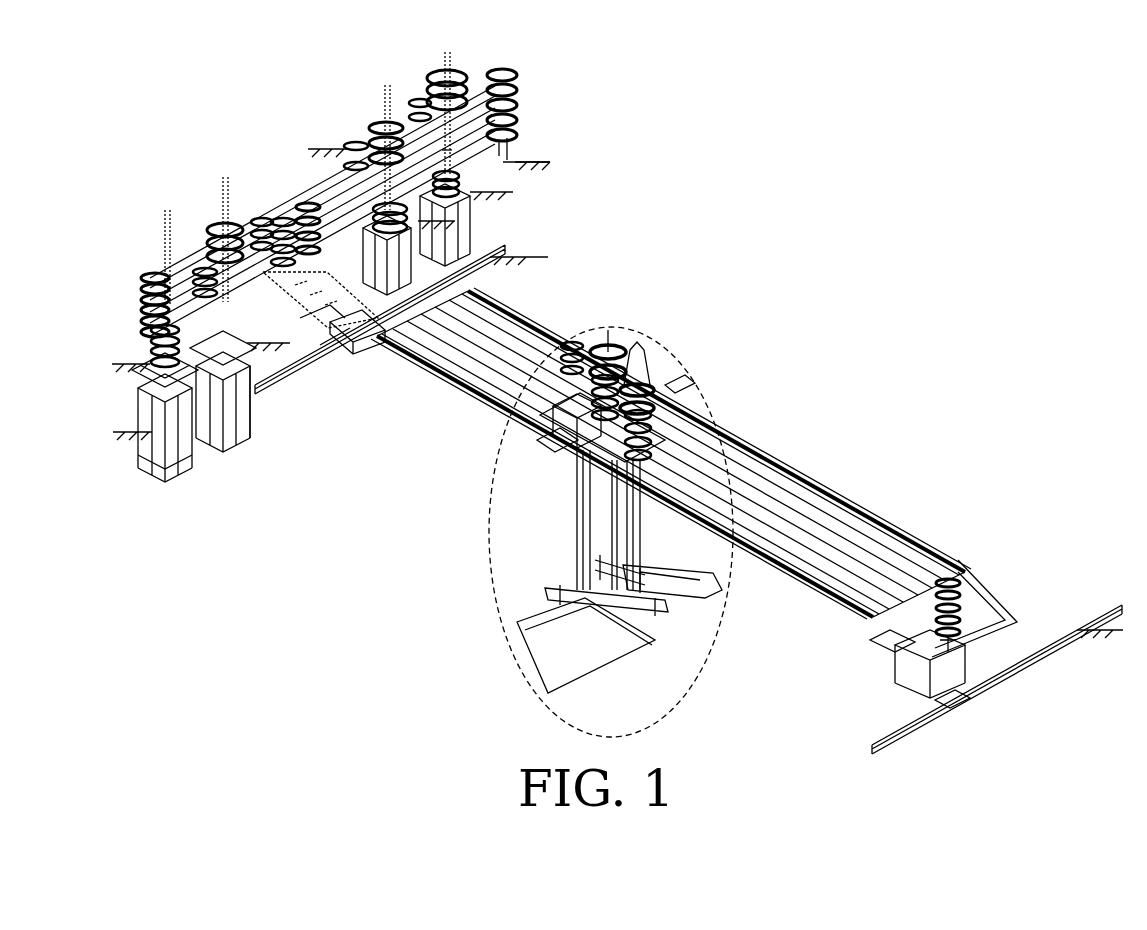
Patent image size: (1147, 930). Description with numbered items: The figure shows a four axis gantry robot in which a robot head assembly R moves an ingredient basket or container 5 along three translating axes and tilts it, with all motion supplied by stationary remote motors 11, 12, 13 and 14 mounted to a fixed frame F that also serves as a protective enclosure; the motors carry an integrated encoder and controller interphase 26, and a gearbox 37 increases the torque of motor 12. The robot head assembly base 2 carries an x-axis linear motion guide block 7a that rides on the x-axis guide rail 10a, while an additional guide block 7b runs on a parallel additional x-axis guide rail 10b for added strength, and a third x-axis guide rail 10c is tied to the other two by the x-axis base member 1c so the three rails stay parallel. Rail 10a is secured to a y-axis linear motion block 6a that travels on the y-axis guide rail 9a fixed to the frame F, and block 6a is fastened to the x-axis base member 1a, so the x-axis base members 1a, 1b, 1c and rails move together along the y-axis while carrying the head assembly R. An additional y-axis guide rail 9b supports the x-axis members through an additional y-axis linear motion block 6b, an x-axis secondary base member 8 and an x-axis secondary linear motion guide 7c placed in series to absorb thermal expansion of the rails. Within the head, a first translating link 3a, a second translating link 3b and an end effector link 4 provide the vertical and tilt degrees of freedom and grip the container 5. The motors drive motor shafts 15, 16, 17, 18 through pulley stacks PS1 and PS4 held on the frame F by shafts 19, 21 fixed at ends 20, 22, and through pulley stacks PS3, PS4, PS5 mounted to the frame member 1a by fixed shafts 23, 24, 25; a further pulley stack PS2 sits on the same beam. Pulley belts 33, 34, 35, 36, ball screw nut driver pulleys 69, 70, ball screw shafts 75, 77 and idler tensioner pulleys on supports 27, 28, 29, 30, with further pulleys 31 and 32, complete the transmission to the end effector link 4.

The x-axis base member 1a is at (310, 330).
The x-axis base member 1b is at (363, 340).
The x-axis base member 1c is at (993, 590).
The robot head assembly base 2 is at (660, 375).
The first translating link 3a is at (617, 570).
The second translating link 3b is at (657, 587).
The end effector link 4 is at (713, 590).
The ingredient basket or container 5 is at (527, 633).
The y-axis linear motion block 6a is at (340, 337).
The additional y-axis linear motion block 6b is at (950, 705).
The x-axis linear motion guide block 7a is at (540, 440).
The additional x-axis linear motion guide block 7b is at (675, 382).
The x-axis secondary linear motion guide 7c is at (888, 665).
The x-axis secondary base member 8 is at (897, 677).
The y-axis linear motion guide rail 9a is at (490, 262).
The additional y-axis guide rail 9b is at (1057, 640).
The x-axis guide rail 10a is at (817, 593).
The additional x-axis guide rail 10b is at (887, 517).
The third x-axis guide rail 10c is at (862, 627).
The motor 11 is at (187, 433).
The motor 12 is at (223, 443).
The motor 13 is at (403, 257).
The motor 14 is at (460, 225).
The motor shaft 15 is at (170, 222).
The motor shaft 16 is at (223, 181).
The motor shaft 17 is at (383, 87).
The motor shaft 18 is at (450, 65).
The shaft 19 is at (157, 342).
The shaft end 20 is at (158, 363).
The shaft 21 is at (507, 147).
The shaft end 22 is at (507, 158).
The fixed shaft 23 is at (305, 262).
The fixed shaft 24 is at (262, 218).
The fixed shaft 25 is at (947, 633).
The integrated encoder and controller interphase 26 is at (157, 470).
The idler tensioner pulley support 27 is at (203, 270).
The idler tensioner pulley support 28 is at (232, 200).
The idler tensioner pulley support 29 is at (365, 148).
The idler tensioner pulley support 30 is at (424, 96).
The insulator 31 is at (357, 153).
The insulator 32 is at (408, 100).
The pulley belt 33 is at (460, 155).
The pulley belt 34 is at (835, 562).
The pulley belt 35 is at (793, 510).
The pulley belt 36 is at (763, 482).
The gearbox 37 is at (243, 377).
The ball screw nut driver pulley 69 is at (650, 368).
The ball screw nut driver pulley 70 is at (627, 357).
The ball screw shaft 75 is at (608, 342).
The ball screw shaft 77 is at (637, 360).
The pulley stack PS1 is at (133, 280).
The position sensor 2 PS2 is at (270, 200).
The pulley stack PS3 is at (300, 183).
The pulley stack PS4 is at (522, 104).
The pulley stack PS5 is at (950, 578).
The robot head assembly R is at (523, 680).
The fixed frame F is at (617, 403).